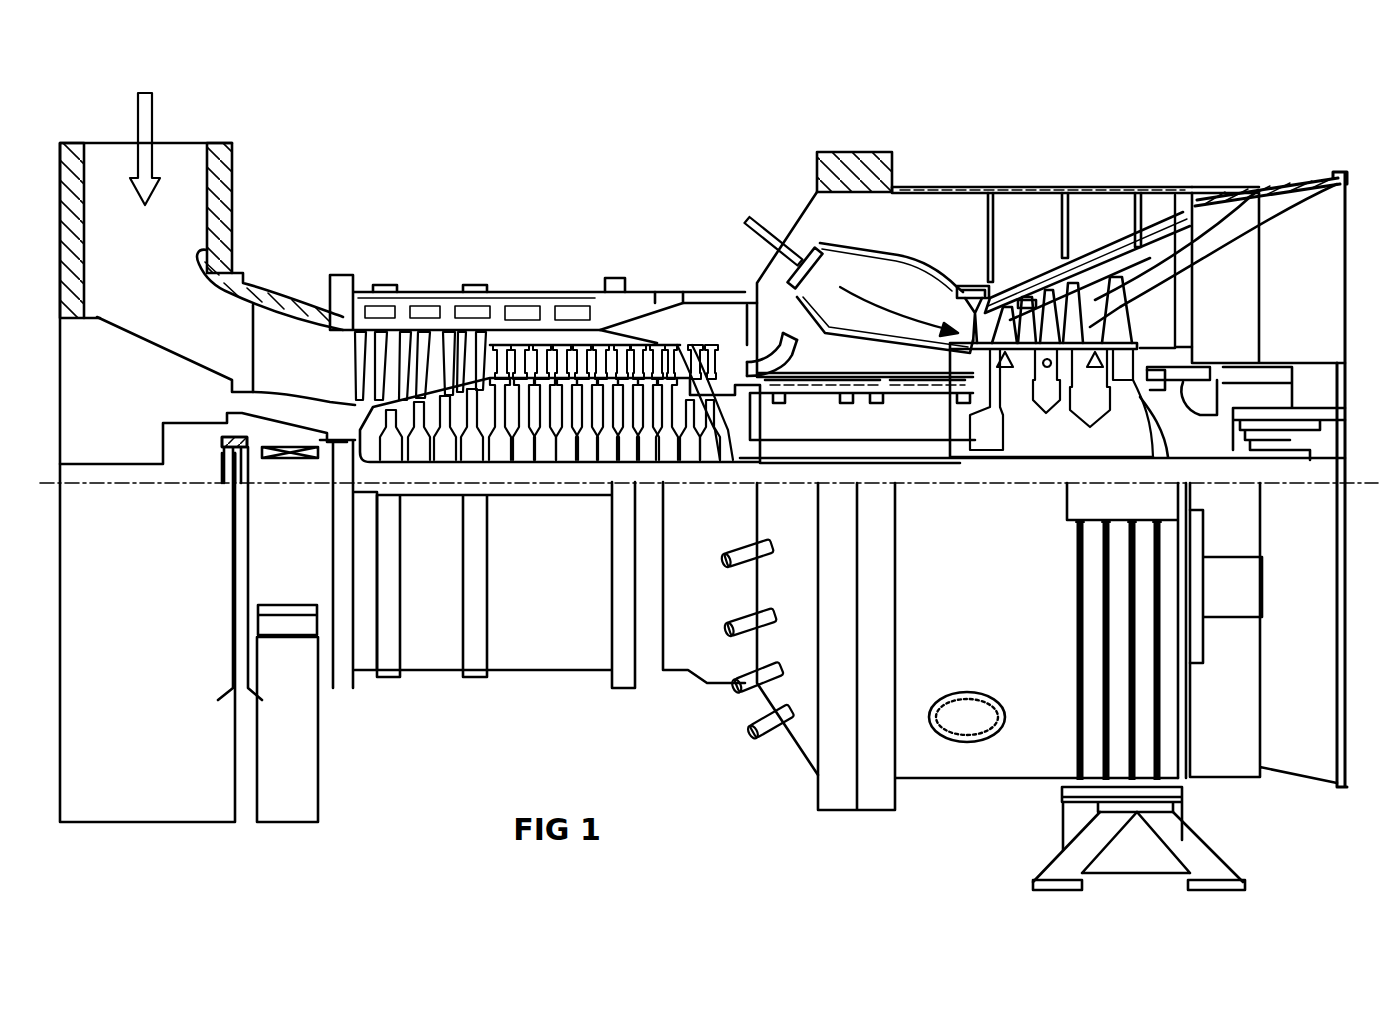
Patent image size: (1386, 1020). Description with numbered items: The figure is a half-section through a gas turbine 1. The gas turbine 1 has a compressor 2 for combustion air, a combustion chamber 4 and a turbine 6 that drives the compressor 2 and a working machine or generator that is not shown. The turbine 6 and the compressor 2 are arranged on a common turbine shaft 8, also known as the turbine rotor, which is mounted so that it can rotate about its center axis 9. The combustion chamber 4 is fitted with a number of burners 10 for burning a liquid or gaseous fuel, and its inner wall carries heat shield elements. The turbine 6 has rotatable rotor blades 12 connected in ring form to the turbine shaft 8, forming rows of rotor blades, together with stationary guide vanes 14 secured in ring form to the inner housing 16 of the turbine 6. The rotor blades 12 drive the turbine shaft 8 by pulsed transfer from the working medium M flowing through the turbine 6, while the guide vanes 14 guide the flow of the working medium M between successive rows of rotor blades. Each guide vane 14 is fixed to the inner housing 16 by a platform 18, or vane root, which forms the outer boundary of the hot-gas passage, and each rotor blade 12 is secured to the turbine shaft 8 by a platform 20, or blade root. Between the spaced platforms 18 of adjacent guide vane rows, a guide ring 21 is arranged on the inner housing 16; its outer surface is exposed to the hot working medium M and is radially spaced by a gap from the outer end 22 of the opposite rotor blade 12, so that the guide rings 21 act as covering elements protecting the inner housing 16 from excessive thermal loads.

The gas turbine 1 is at (404, 122).
The compressor 2 is at (450, 285).
The combustion chamber 4 is at (875, 290).
The working medium M is at (930, 270).
The turbine 6 is at (1010, 330).
The turbine shaft 8 is at (800, 440).
The center axis 9 is at (157, 485).
The burner 10 is at (742, 258).
The rotor blade 12 is at (1272, 222).
The guide vane 14 is at (1046, 300).
The inner housing 16 is at (1020, 268).
The platform 18 is at (1115, 215).
The platform 20 is at (1090, 310).
The guide ring 21 is at (1085, 212).
The outer end 22 is at (1215, 228).